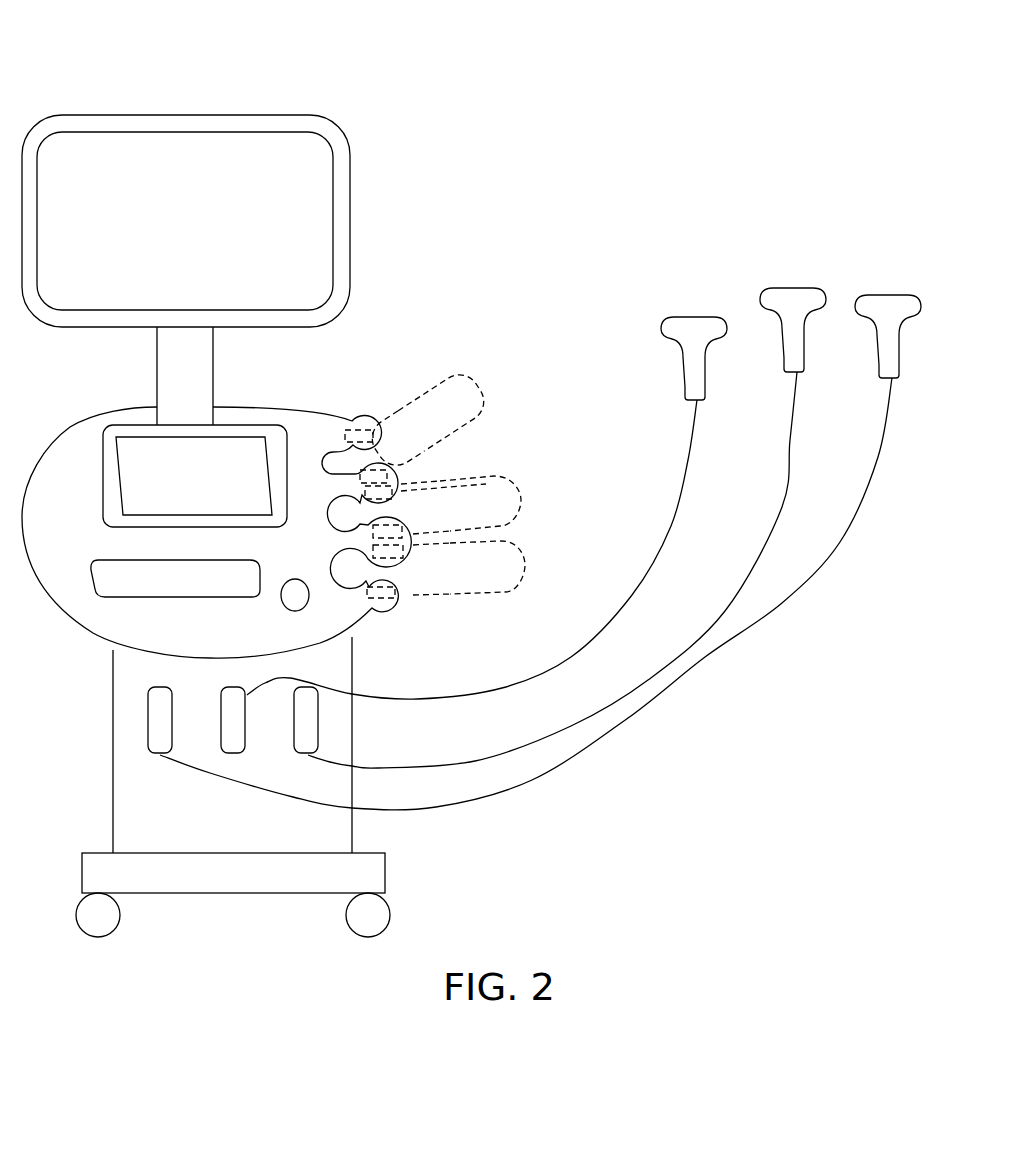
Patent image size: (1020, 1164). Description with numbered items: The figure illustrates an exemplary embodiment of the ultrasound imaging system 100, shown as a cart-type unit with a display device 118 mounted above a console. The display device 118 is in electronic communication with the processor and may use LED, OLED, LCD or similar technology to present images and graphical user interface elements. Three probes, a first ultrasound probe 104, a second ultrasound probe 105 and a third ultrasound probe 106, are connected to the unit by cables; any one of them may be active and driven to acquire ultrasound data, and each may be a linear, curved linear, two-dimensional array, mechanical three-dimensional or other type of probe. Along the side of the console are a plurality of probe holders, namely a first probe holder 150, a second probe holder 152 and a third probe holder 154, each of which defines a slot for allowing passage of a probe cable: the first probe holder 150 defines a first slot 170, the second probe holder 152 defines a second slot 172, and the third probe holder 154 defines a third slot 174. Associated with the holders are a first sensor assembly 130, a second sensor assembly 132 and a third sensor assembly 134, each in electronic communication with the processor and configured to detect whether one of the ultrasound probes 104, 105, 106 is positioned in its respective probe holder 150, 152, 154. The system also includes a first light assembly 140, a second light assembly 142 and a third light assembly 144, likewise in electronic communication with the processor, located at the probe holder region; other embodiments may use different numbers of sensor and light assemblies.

The ultrasound imaging system 100 is at (484, 77).
The display device 118 is at (352, 207).
The first ultrasound probe 104 is at (695, 315).
The second ultrasound probe 105 is at (792, 288).
The third ultrasound probe 106 is at (890, 293).
The first sensor assembly 130 is at (380, 599).
The second sensor assembly 132 is at (410, 522).
The third sensor assembly 134 is at (403, 467).
The first light assembly 140 is at (415, 555).
The second light assembly 142 is at (402, 480).
The third light assembly 144 is at (358, 430).
The first probe holder 150 is at (527, 568).
The second probe holder 152 is at (520, 500).
The third probe holder 154 is at (480, 380).
The first slot 170 is at (392, 573).
The second slot 172 is at (513, 477).
The third slot 174 is at (378, 453).